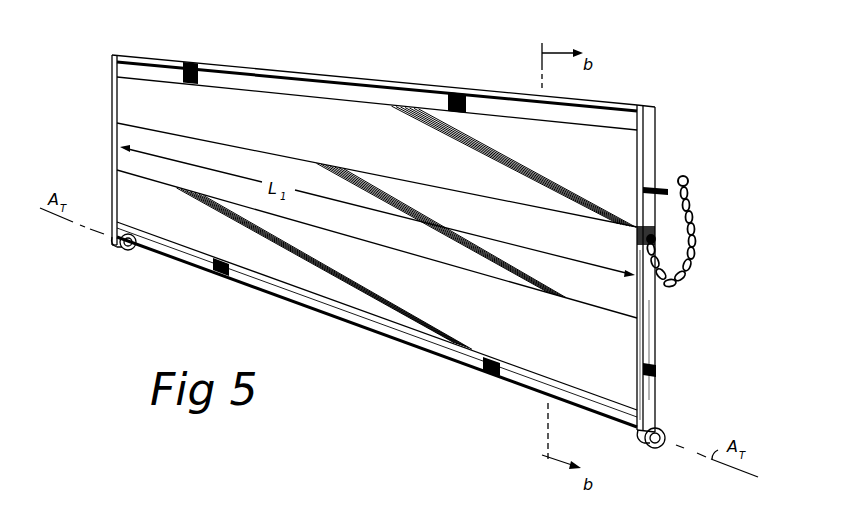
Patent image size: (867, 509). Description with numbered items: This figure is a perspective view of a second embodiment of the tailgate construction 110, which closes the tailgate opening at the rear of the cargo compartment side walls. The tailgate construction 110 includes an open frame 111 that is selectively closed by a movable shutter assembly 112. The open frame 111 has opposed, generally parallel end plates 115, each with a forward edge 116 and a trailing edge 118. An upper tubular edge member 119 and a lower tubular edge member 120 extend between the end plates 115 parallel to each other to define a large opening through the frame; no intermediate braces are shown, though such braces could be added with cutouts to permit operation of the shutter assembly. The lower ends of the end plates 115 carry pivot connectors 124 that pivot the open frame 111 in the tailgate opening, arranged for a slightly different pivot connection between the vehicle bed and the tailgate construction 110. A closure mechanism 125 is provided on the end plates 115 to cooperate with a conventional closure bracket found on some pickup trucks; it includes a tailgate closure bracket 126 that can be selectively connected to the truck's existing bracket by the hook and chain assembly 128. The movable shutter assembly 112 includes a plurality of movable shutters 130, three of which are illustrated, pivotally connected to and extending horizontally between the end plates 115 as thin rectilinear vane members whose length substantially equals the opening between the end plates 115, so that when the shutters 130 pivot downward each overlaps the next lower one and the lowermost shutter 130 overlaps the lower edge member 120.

The tailgate construction 110 is at (260, 45).
The open frame 111 is at (372, 76).
The movable shutter assembly 112 is at (305, 296).
The end plate 115 is at (105, 66).
The forward edge 116 is at (658, 347).
The trailing edge 118 is at (643, 393).
The upper tubular edge member 119 is at (416, 88).
The lower tubular edge member 120 is at (219, 270).
The pivot connector 124 is at (123, 250).
The closure mechanism 125 is at (691, 177).
The tailgate closure bracket 126 is at (661, 186).
The hook and chain assembly 128 is at (694, 221).
The movable shutter 130 is at (329, 135).